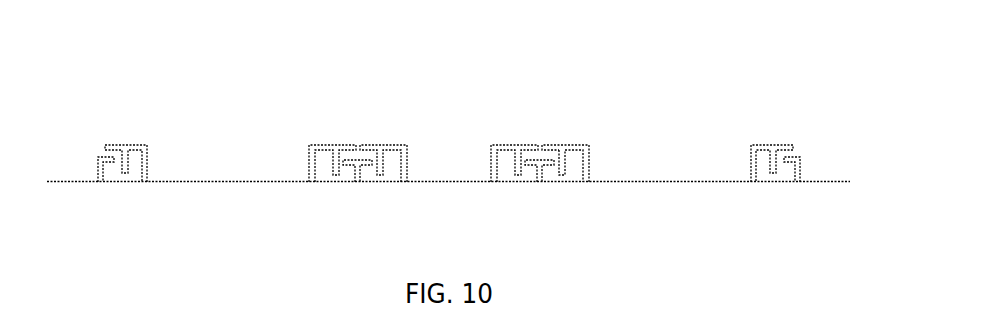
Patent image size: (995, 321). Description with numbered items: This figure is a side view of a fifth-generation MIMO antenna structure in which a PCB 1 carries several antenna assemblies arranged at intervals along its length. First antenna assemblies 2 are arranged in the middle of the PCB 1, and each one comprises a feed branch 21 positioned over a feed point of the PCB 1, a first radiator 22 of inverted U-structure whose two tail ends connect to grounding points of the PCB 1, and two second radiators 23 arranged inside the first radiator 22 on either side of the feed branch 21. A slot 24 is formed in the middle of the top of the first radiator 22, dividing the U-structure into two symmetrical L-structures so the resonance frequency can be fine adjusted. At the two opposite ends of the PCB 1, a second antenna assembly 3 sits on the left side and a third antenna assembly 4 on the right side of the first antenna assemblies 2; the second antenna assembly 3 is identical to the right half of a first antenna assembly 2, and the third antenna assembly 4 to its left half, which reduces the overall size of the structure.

The PCB 1 is at (245, 182).
The first antenna assembly 2 is at (347, 157).
The second antenna assembly 3 is at (130, 170).
The third antenna assembly 4 is at (765, 173).
The feed branch 21 is at (538, 175).
The first radiator 22 is at (580, 145).
The second radiator 23 is at (565, 175).
The slot 24 is at (540, 145).